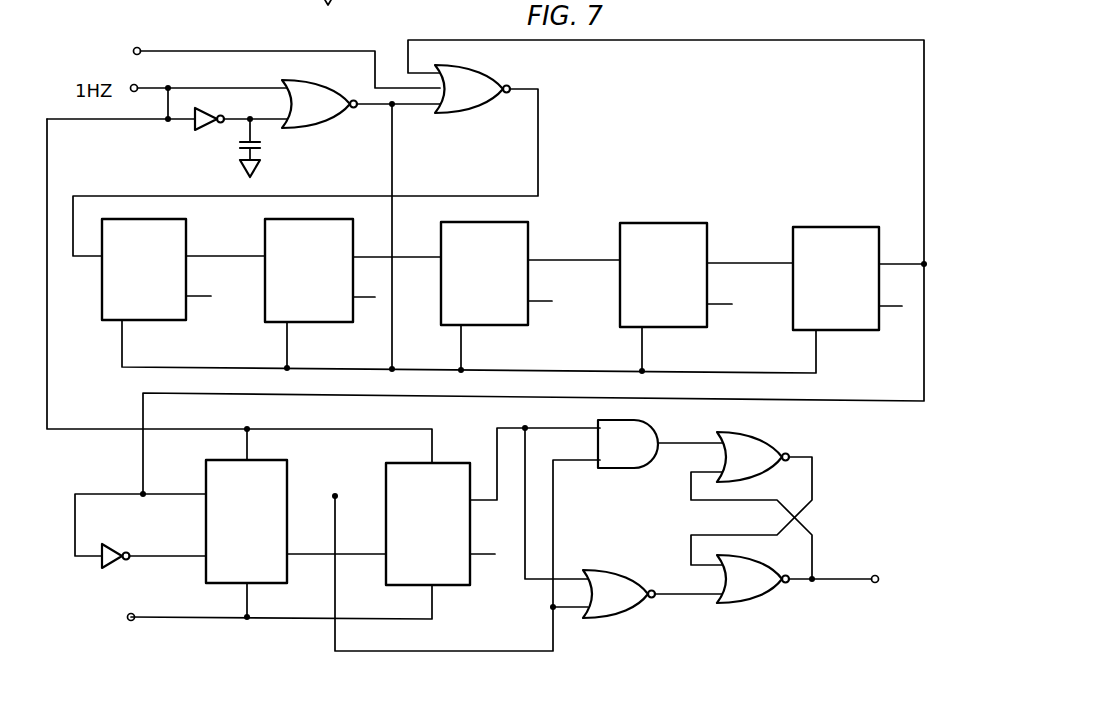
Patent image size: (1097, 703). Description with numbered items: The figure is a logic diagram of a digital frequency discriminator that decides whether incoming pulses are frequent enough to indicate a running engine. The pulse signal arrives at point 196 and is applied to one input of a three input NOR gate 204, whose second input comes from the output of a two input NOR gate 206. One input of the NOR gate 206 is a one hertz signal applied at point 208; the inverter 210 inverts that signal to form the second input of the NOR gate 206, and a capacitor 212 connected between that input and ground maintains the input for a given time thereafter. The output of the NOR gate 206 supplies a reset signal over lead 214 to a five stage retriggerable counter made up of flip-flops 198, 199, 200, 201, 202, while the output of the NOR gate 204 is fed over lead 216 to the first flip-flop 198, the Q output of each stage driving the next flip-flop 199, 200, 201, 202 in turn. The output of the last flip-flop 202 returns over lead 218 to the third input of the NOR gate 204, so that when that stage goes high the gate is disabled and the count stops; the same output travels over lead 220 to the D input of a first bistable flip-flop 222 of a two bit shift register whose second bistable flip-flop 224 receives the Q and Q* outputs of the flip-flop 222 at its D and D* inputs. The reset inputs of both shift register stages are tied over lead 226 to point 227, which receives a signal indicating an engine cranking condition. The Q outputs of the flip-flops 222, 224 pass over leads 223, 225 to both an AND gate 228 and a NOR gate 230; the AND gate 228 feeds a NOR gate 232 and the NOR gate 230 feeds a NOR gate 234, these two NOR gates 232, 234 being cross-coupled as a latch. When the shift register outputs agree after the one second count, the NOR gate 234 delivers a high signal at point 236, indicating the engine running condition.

The point 196 is at (133, 44).
The input point 208 is at (127, 82).
The inverter 210 is at (192, 129).
The capacitor 212 is at (258, 150).
The two input NOR gate 206 is at (332, 122).
The three input NOR gate 204 is at (488, 70).
The lead 214 is at (393, 157).
The lead 216 is at (538, 152).
The lead 218 is at (680, 43).
The lead 220 is at (924, 325).
The flip-flop 198 is at (185, 320).
The flip-flop 199 is at (313, 323).
The flip-flop 200 is at (528, 312).
The flip-flop 201 is at (707, 315).
The flip-flop 202 is at (853, 330).
The first bistable flip-flop 222 is at (288, 470).
The second bistable flip-flop 224 is at (450, 462).
The lead 223 is at (427, 655).
The lead 225 is at (513, 428).
The lead 226 is at (273, 622).
The point 227 is at (128, 622).
The AND gate 228 is at (648, 422).
The NOR gate 230 is at (633, 613).
The NOR gate 232 is at (772, 433).
The NOR gate 234 is at (767, 597).
The point 236 is at (877, 572).